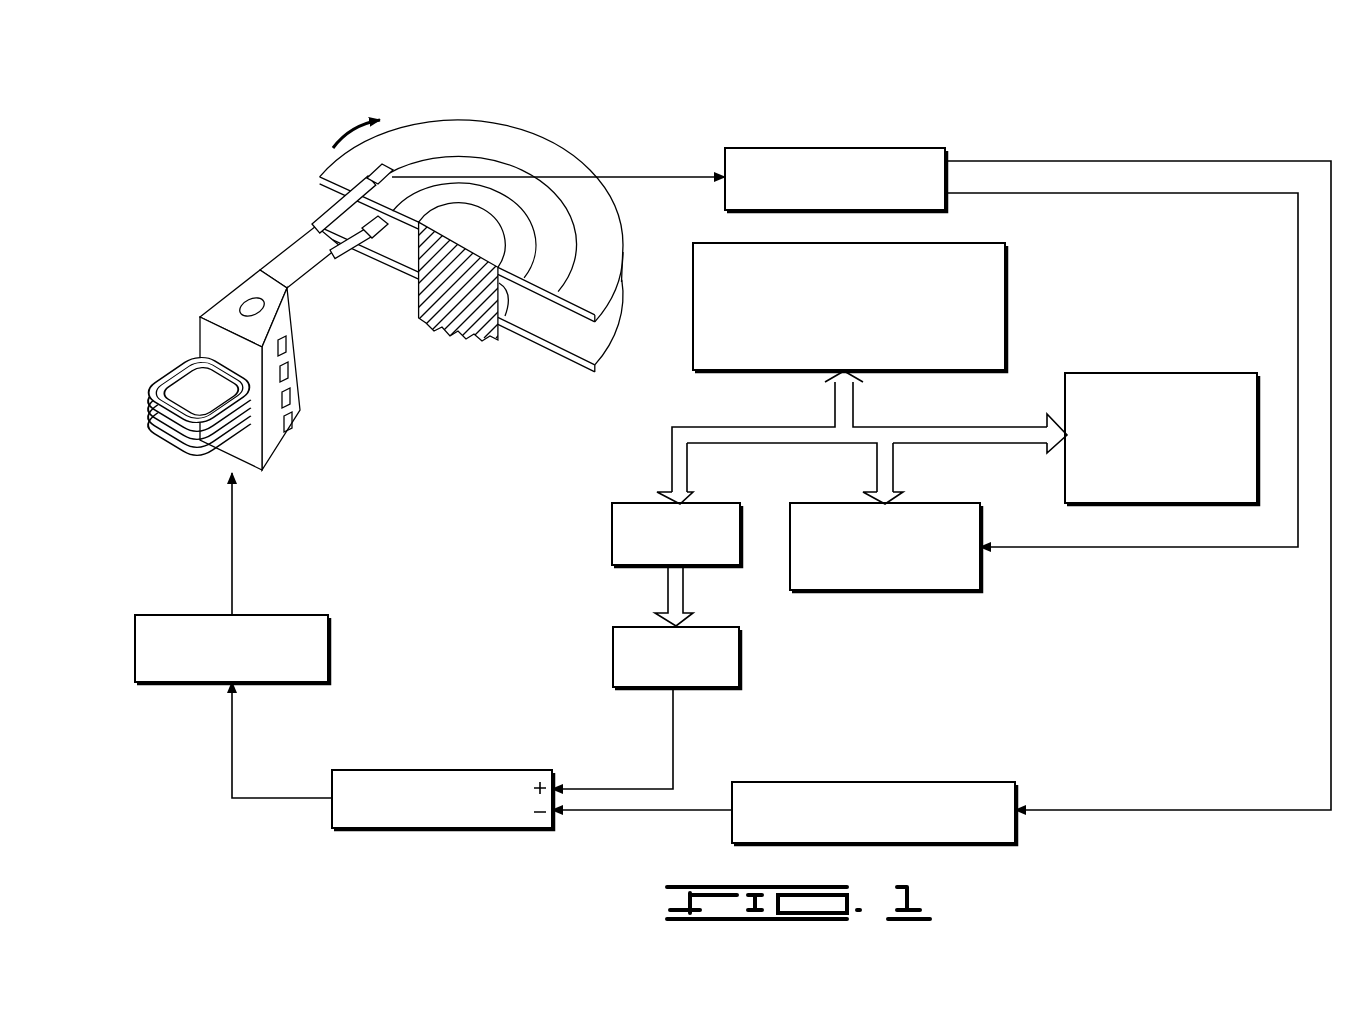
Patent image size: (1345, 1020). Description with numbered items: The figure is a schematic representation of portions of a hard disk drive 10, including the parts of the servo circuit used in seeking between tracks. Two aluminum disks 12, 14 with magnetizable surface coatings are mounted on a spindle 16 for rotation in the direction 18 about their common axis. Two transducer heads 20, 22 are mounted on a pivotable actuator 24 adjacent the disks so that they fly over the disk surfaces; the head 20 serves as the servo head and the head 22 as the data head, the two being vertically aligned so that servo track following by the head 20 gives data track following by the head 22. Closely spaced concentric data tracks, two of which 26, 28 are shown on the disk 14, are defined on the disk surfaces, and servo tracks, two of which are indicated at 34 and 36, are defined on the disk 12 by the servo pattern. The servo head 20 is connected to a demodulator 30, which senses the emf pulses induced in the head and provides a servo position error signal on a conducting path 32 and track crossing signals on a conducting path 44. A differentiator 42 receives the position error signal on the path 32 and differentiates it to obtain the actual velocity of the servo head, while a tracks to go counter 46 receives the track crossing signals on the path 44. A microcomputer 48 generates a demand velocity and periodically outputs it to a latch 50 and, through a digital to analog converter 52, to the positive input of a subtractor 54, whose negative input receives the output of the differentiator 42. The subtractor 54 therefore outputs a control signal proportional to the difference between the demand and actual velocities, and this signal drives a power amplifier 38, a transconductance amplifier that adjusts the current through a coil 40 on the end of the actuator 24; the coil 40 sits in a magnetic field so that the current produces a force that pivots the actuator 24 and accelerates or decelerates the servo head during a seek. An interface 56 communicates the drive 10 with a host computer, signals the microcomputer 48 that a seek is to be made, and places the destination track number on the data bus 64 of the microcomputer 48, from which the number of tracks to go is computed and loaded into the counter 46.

The hard disk drive 10 is at (1046, 122).
The disk 12 is at (457, 122).
The disk 14 is at (594, 322).
The spindle 16 is at (473, 330).
The direction of rotation 18 is at (352, 136).
The transducer head 20 is at (372, 176).
The transducer head 22 is at (366, 226).
The pivotable actuator 24 is at (226, 290).
The data track 26 is at (508, 320).
The data track 28 is at (562, 325).
The demodulator 30 is at (827, 157).
The conducting path 32 is at (1110, 161).
The servo track 34 is at (505, 193).
The servo track 36 is at (574, 223).
The power amplifier 38 is at (302, 623).
The coil 40 is at (203, 463).
The differentiator 42 is at (902, 792).
The conducting path 44 is at (1084, 196).
The tracks to go counter 46 is at (945, 590).
The microcomputer 48 is at (992, 330).
The latch 50 is at (638, 503).
The digital to analog converter 52 is at (638, 635).
The subtractor 54 is at (415, 777).
The interface 56 is at (1097, 388).
The data bus 64 is at (925, 437).